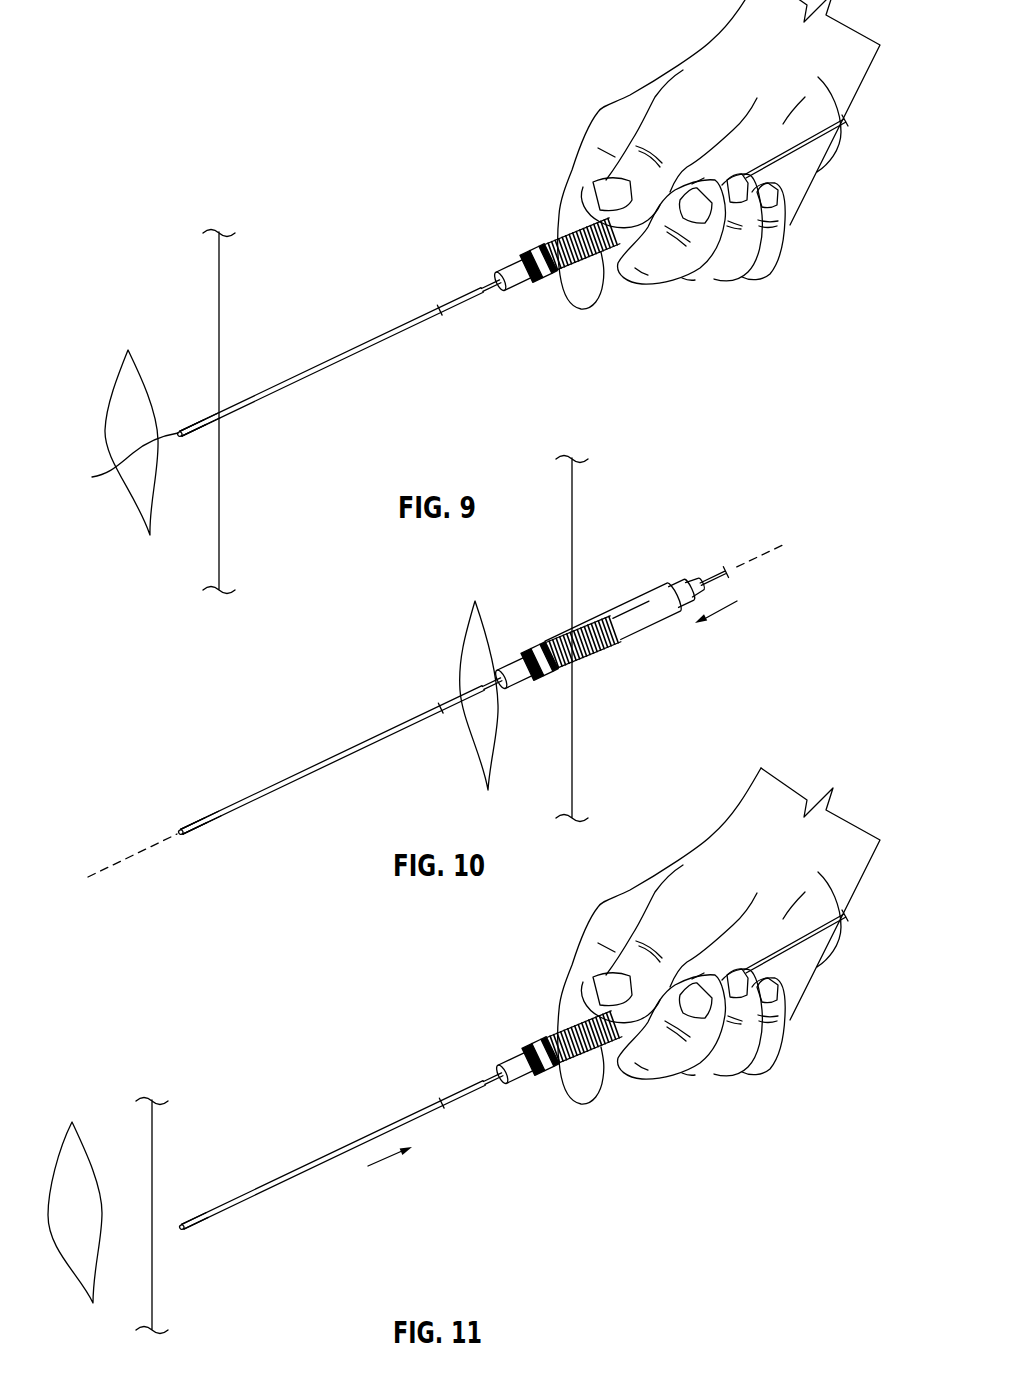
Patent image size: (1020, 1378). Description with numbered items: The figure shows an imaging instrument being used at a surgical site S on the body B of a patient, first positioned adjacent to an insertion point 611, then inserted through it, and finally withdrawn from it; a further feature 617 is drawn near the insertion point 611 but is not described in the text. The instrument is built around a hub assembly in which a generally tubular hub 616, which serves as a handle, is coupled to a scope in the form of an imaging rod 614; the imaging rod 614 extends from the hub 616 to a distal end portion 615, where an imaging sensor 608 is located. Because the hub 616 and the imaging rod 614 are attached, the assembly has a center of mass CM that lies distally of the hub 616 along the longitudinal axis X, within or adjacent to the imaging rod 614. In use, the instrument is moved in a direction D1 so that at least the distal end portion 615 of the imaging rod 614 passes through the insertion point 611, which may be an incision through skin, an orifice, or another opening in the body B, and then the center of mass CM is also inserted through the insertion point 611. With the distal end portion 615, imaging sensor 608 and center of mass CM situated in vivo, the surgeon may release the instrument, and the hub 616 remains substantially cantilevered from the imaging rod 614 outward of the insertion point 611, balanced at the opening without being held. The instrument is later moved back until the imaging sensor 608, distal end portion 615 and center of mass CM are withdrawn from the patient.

In FIG. 9, the imaging sensor 608 is at (191, 412).
In FIG. 10, the imaging sensor 608 is at (192, 809).
In FIG. 9, the insertion point 611 is at (106, 390).
In FIG. 10, the insertion point 611 is at (497, 623).
In FIG. 11, the insertion point 611 is at (87, 1133).
In FIG. 9, the imaging rod 614 is at (318, 366).
In FIG. 10, the imaging rod 614 is at (303, 776).
In FIG. 11, the imaging rod 614 is at (323, 1157).
In FIG. 9, the distal end portion 615 is at (208, 433).
In FIG. 10, the distal end portion 615 is at (206, 838).
In FIG. 11, the distal end portion 615 is at (193, 1233).
In FIG. 9, the hub 616 is at (562, 288).
In FIG. 10, the hub 616 is at (628, 632).
In FIG. 11, the hub 616 is at (565, 1082).
In FIG. 9, the tissue tract 617 is at (113, 464).
In FIG. 9, the surgical site S is at (268, 225).
In FIG. 10, the surgical site S is at (520, 589).
In FIG. 11, the surgical site S is at (208, 1059).
In FIG. 9, the body B is at (234, 297).
In FIG. 10, the body B is at (583, 540).
In FIG. 11, the body B is at (179, 1134).
In FIG. 9, the center of mass CM is at (442, 316).
In FIG. 10, the center of mass CM is at (442, 706).
In FIG. 11, the center of mass CM is at (441, 1105).
In FIG. 10, the direction D1 is at (728, 612).
In FIG. 10, the longitudinal axis X is at (109, 874).